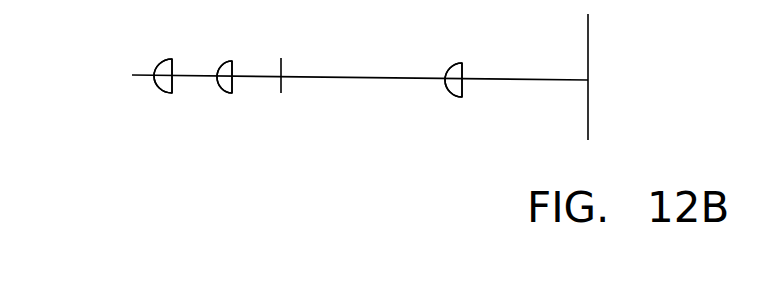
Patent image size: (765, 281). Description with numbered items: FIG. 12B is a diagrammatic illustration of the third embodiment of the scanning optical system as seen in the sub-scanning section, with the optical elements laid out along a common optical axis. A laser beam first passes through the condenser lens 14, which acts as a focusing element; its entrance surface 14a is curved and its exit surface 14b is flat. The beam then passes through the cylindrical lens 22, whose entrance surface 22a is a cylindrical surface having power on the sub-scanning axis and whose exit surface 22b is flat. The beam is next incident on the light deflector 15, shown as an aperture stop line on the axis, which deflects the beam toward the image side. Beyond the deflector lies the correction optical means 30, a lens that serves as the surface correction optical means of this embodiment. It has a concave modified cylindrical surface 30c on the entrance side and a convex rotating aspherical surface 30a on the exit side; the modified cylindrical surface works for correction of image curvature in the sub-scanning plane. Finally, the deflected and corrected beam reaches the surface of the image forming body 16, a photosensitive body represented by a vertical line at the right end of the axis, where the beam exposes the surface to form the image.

The condenser lens 14 is at (167, 58).
The surface of condenser lens 14a is at (157, 87).
The surface of condenser lens 14b is at (172, 90).
The cylindrical lens 22 is at (227, 70).
The cylindrical surface 22a is at (218, 88).
The surface of cylindrical lens 22b is at (237, 93).
The light deflector 15 is at (281, 60).
The correction optical means 30 is at (457, 65).
The concave modified cylindrical surface 30c is at (446, 87).
The convex aspherical surface 30a is at (463, 92).
The image forming body 16 is at (590, 34).